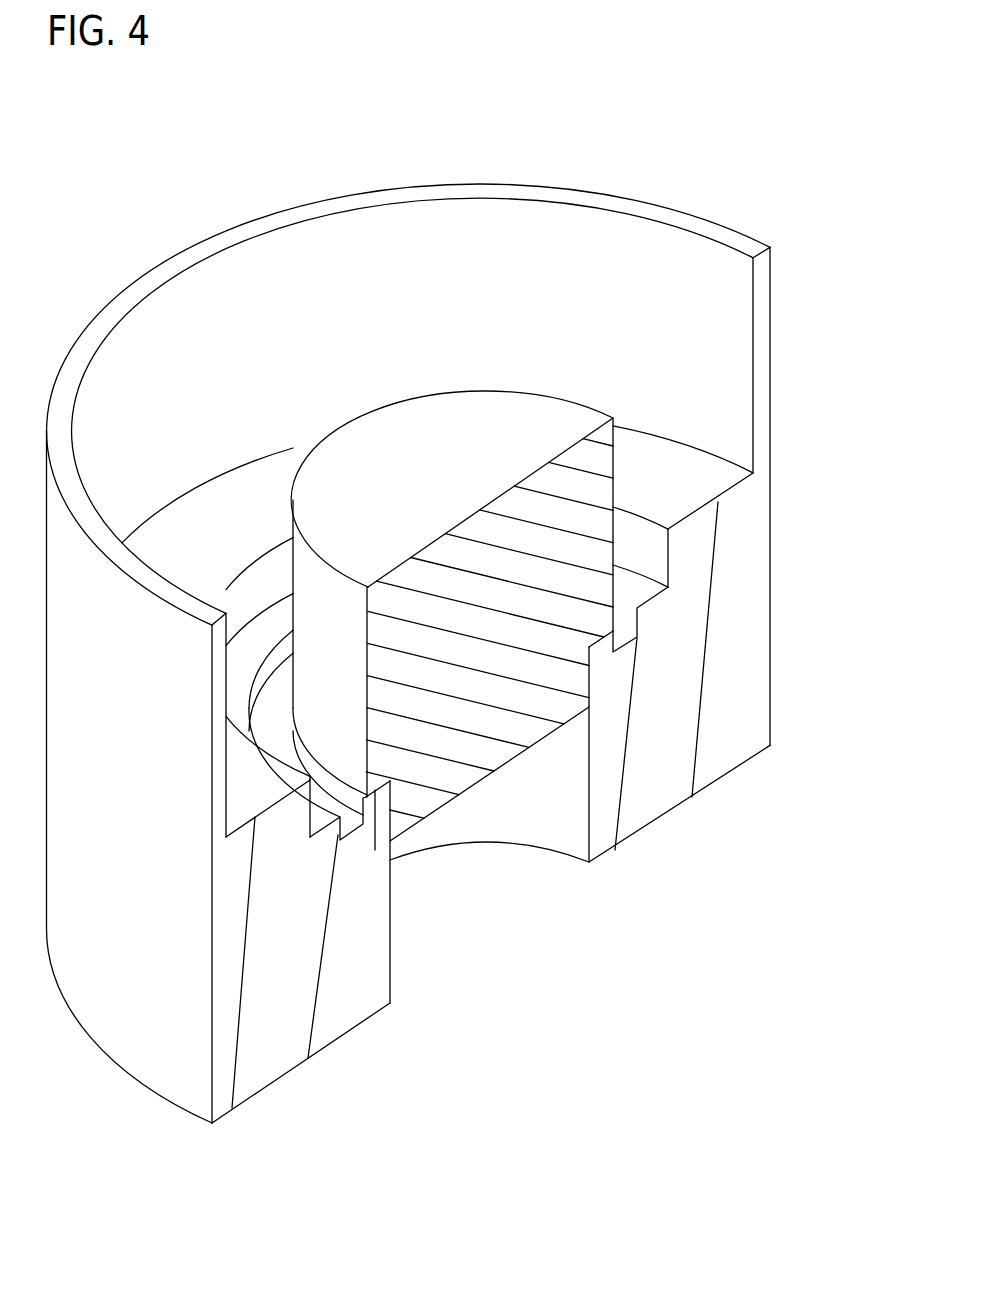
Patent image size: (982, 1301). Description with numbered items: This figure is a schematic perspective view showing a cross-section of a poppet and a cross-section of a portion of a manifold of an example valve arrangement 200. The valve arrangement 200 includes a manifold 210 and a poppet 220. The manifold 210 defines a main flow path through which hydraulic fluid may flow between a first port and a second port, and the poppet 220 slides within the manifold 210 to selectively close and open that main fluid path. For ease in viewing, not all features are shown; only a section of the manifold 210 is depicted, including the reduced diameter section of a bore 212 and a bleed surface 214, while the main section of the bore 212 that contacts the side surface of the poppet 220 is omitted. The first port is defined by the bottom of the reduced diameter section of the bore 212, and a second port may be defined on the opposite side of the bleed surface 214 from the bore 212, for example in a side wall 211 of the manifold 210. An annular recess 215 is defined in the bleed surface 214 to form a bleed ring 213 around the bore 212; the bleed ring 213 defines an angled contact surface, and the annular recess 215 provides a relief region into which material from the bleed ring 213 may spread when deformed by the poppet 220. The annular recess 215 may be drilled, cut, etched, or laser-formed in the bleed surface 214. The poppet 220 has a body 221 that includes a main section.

The valve arrangement 200 is at (775, 168).
The manifold 210 is at (137, 1075).
The side wall 211 is at (235, 228).
The bore 212 is at (560, 806).
The bleed ring 213 is at (374, 800).
The bleed surface 214 is at (637, 594).
The annular recess 215 is at (343, 827).
The poppet 220 is at (577, 372).
The body 221 is at (380, 445).